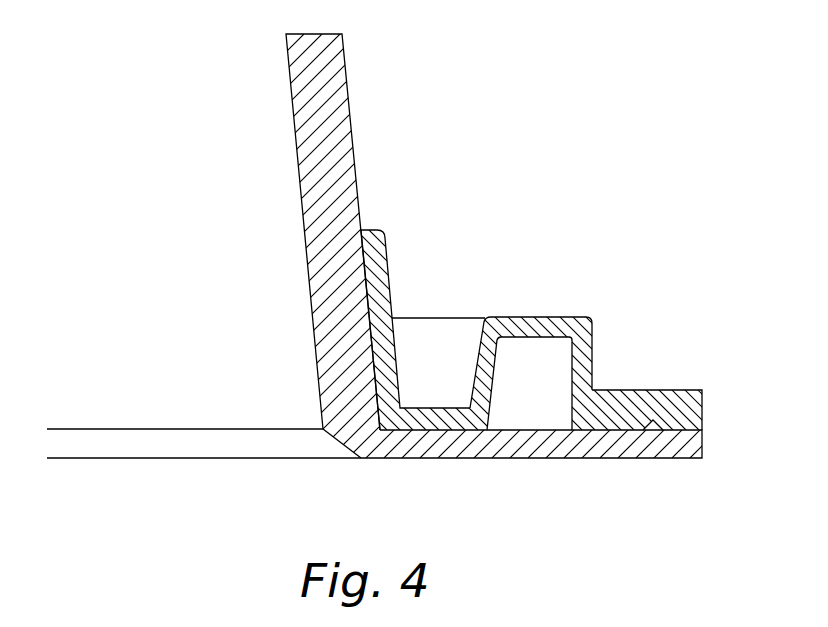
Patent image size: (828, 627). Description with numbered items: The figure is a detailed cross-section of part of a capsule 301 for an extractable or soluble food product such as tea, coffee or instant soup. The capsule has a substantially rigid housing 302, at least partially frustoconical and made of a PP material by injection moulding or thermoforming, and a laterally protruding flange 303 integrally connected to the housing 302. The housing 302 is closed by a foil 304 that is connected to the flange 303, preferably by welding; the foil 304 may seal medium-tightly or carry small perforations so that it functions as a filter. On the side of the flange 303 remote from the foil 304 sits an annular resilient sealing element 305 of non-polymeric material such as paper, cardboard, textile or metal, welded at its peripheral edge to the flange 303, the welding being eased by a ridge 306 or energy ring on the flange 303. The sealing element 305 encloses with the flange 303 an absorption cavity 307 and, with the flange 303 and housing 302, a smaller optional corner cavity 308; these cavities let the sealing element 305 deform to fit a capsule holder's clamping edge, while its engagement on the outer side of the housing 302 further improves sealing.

The capsule 301 is at (393, 49).
The housing 302 is at (335, 165).
The flange 303 is at (515, 445).
The foil 304 is at (228, 460).
The sealing element 305 is at (660, 405).
The ridge 306 is at (653, 432).
The absorption cavity 307 is at (530, 370).
The corner cavity 308 is at (387, 423).